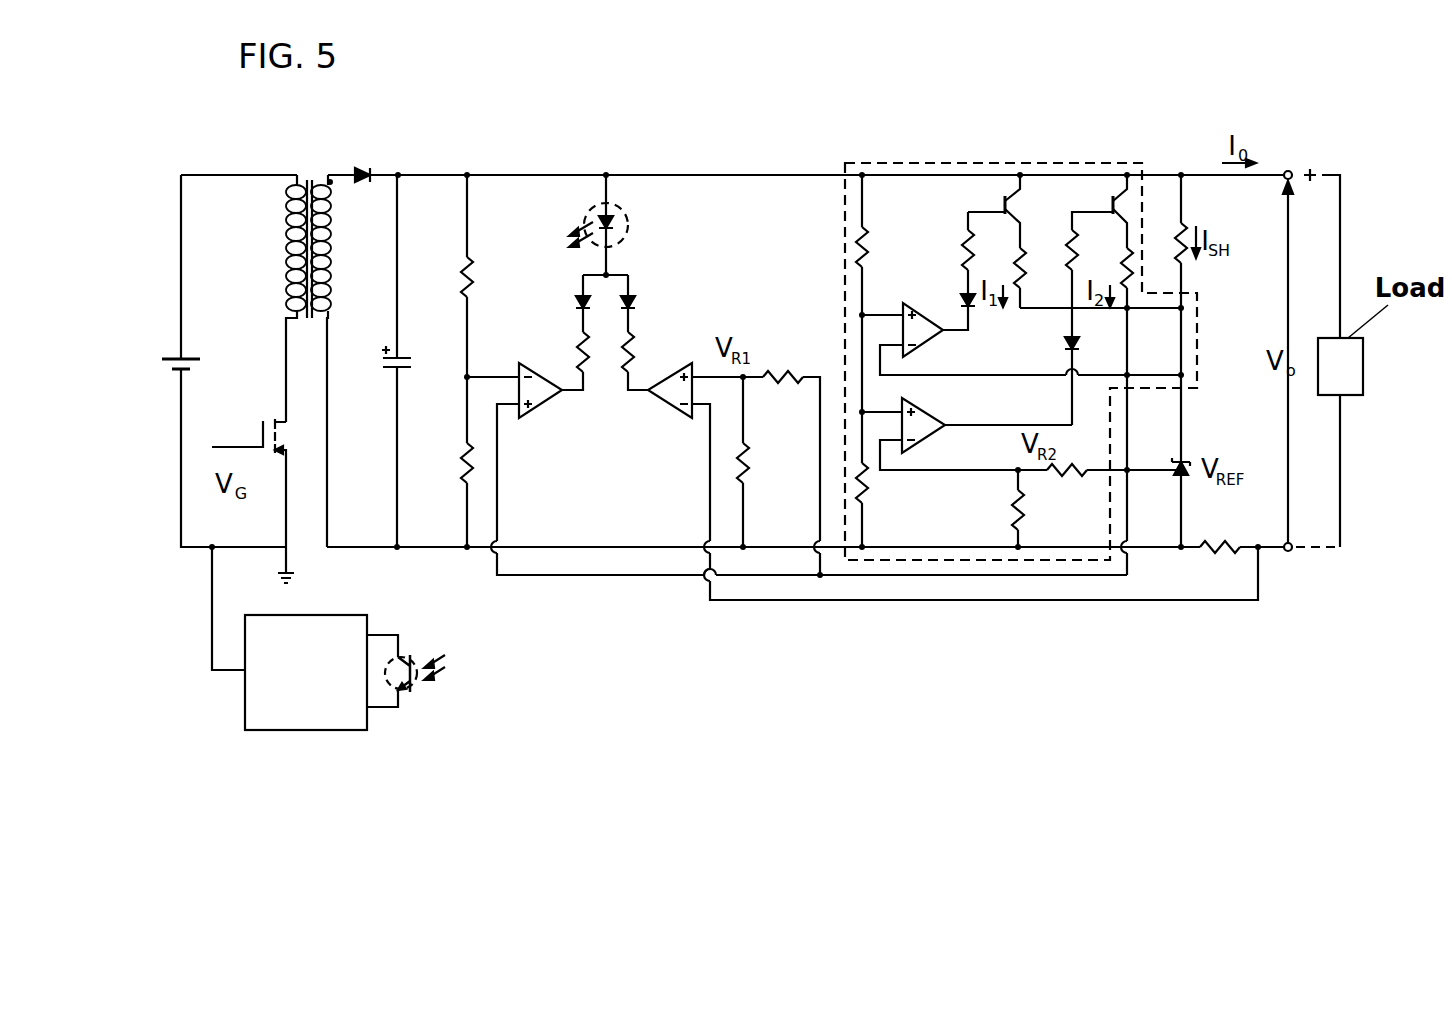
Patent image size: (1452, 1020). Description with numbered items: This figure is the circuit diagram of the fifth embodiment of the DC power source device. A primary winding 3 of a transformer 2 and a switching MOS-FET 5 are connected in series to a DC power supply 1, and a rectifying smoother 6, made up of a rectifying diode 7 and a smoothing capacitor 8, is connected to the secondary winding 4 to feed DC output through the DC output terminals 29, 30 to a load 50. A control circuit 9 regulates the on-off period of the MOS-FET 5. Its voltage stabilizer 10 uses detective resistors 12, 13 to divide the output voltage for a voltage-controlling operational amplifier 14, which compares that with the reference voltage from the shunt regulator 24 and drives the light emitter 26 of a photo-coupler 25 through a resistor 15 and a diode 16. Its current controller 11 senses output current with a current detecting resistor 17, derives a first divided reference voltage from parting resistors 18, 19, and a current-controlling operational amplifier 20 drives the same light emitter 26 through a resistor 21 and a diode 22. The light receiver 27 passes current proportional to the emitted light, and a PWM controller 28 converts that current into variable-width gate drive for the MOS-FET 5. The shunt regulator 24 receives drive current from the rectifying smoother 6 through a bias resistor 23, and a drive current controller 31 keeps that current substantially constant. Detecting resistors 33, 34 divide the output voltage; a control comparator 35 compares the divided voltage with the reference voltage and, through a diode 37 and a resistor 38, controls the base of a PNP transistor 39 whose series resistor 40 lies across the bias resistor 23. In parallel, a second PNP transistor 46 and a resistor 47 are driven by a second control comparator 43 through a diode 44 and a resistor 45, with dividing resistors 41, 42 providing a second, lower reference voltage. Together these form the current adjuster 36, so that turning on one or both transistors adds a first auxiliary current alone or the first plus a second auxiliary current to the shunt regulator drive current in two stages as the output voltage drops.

The DC power supply 1 is at (173, 353).
The transformer 2 is at (308, 176).
The primary winding 3 is at (285, 252).
The secondary winding 4 is at (329, 252).
The MOS-FET 5 is at (266, 425).
The rectifying smoother 6 is at (386, 163).
The rectifying diode 7 is at (359, 168).
The smoothing capacitor 8 is at (392, 367).
The control circuit 9 is at (812, 665).
The voltage stabilizer 10 is at (500, 312).
The current controller 11 is at (725, 306).
The detective resistor 12 is at (462, 274).
The detective resistor 13 is at (462, 462).
The voltage-controlling operational amplifier 14 is at (545, 415).
The resistor 15 is at (577, 352).
The diode 16 is at (576, 304).
The current detecting resistor 17 is at (1215, 556).
The parting resistor 18 is at (783, 372).
The parting resistor 19 is at (748, 462).
The current-controlling operational amplifier 20 is at (662, 415).
The resistor 21 is at (628, 352).
The diode 22 is at (632, 304).
The bias resistor 23 is at (1176, 240).
The shunt regulator 24 is at (1187, 458).
The photo-coupler 25 is at (558, 215).
The light emitter 26 is at (628, 226).
The light receiver 27 is at (408, 652).
The PWM controller 28 is at (307, 615).
The DC output positive terminal 29 is at (1287, 170).
The DC output terminal 30 is at (1288, 552).
The drive current controller 31 is at (842, 290).
The detecting resistor 33 is at (866, 240).
The detecting resistor 34 is at (866, 485).
The control comparator 35 is at (928, 350).
The current adjuster 36 is at (948, 221).
The diode 37 is at (976, 318).
The resistor 38 is at (963, 264).
The PNP transistor 39 is at (1002, 206).
The resistor 40 is at (1015, 274).
The dividing resistor 41 is at (1071, 476).
The dividing resistor 42 is at (1013, 511).
The second control comparator 43 is at (931, 445).
The diode 44 is at (1082, 344).
The resistor 45 is at (1068, 267).
The PNP transistor 46 is at (1110, 206).
The resistor 47 is at (1114, 278).
The load 50 is at (1353, 380).